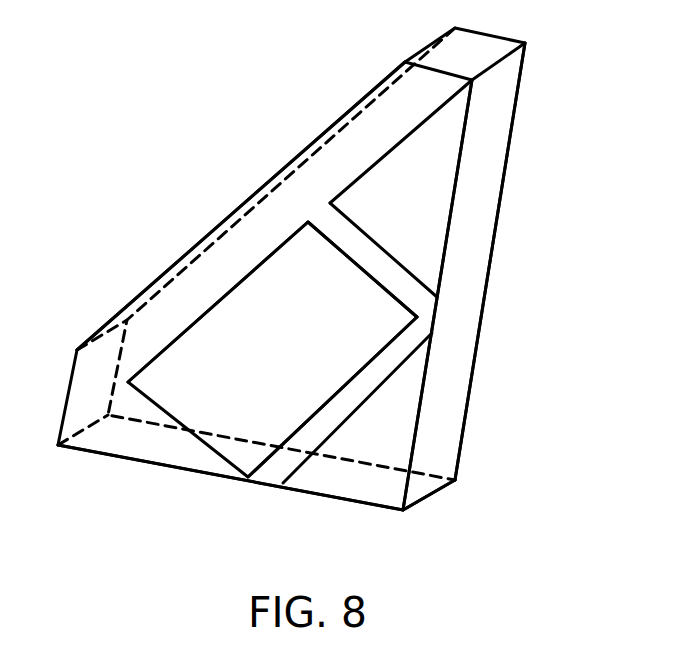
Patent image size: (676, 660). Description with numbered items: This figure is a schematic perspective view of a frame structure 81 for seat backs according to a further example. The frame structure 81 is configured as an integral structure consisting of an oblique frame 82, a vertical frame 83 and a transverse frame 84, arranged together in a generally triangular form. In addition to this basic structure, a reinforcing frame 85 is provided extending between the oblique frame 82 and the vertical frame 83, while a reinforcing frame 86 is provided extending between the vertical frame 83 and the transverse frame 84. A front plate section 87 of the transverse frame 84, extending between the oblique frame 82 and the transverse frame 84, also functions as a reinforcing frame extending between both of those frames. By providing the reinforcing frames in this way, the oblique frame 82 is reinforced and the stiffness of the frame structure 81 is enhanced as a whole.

The frame structure 81 is at (302, 93).
The oblique frame 82 is at (203, 280).
The vertical frame 83 is at (475, 253).
The transverse frame 84 is at (340, 480).
The reinforcing frame 85 is at (373, 258).
The reinforcing frame 86 is at (362, 387).
The front plate section 87 is at (137, 405).